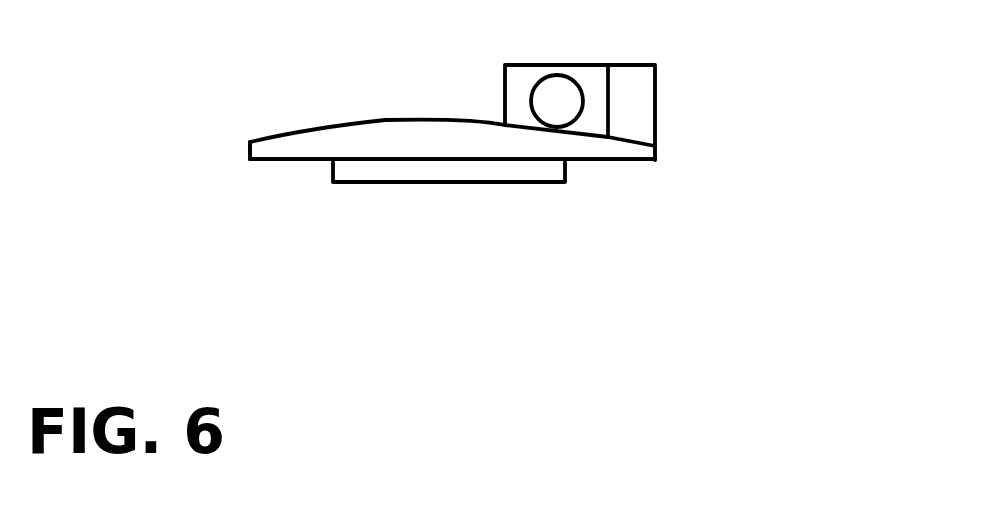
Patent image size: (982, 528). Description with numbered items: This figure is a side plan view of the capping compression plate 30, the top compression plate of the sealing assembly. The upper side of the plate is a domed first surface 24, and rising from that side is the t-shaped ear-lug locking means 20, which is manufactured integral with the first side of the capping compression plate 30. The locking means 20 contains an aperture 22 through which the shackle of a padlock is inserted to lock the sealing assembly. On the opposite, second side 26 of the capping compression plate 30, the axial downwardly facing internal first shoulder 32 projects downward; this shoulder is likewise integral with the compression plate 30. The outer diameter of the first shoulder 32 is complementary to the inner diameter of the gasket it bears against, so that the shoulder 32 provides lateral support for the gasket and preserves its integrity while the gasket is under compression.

The t-shaped ear-lug locking means 20 is at (674, 103).
The aperture 22 is at (571, 80).
The domed first surface 24 is at (345, 123).
The second side 26 is at (292, 160).
The capping compression plate 30 is at (232, 153).
The axial downwardly facing internal first shoulder 32 is at (565, 172).